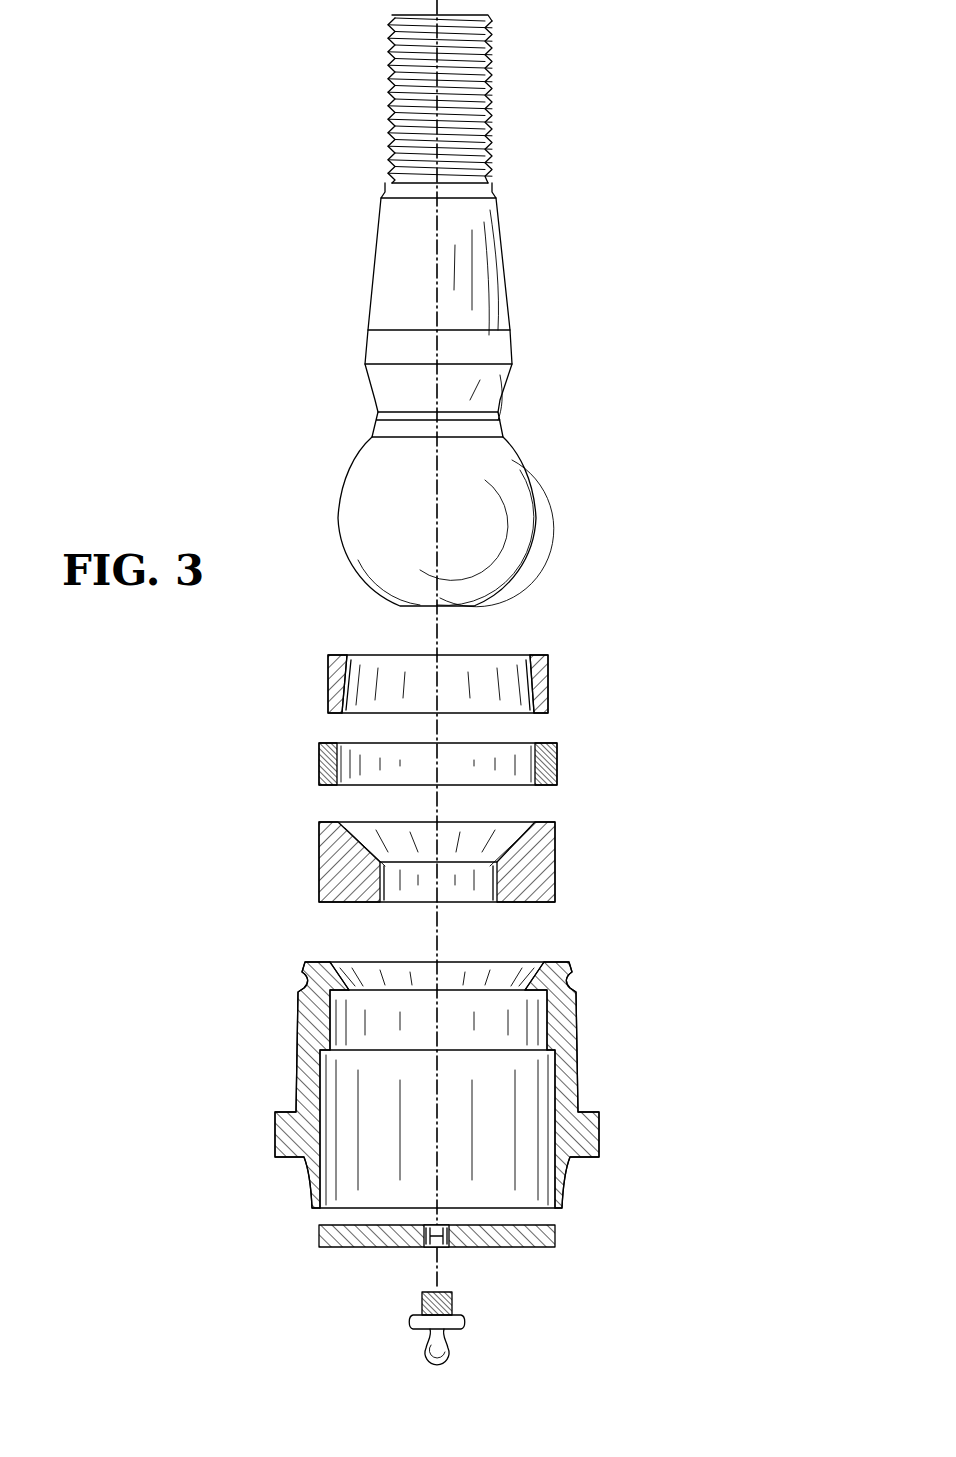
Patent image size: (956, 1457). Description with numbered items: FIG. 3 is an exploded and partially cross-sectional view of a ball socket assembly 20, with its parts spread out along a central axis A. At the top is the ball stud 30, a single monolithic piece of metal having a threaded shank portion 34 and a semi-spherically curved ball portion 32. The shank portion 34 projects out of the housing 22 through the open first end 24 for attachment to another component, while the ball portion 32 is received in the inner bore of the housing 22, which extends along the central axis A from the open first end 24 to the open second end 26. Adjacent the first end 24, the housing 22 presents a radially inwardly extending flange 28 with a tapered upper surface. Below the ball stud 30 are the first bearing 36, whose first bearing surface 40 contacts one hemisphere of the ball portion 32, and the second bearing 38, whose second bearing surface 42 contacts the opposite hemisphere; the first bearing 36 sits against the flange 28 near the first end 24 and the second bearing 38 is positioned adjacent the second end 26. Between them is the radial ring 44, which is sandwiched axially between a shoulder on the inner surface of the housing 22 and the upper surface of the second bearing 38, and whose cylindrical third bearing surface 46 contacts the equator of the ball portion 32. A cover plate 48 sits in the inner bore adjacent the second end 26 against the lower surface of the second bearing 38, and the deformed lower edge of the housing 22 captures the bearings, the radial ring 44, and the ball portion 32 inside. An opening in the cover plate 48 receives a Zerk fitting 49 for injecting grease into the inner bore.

The central axis A is at (468, 4).
The ball socket assembly 20 is at (745, 632).
The housing 22 is at (416, 1085).
The open first end 24 is at (506, 962).
The open second end 26 is at (332, 1216).
The radially inwardly extending flange 28 is at (568, 992).
The ball stud 30 is at (441, 311).
The ball portion 32 is at (409, 518).
The shank portion 34 is at (381, 306).
The first bearing 36 is at (420, 650).
The second bearing 38 is at (386, 864).
The first bearing surface 40 is at (590, 605).
The second bearing surface 42 is at (355, 836).
The radial ring 44 is at (423, 737).
The third bearing surface 46 is at (608, 718).
The cover plate 48 is at (345, 1250).
The Zerk fitting 49 is at (450, 1350).